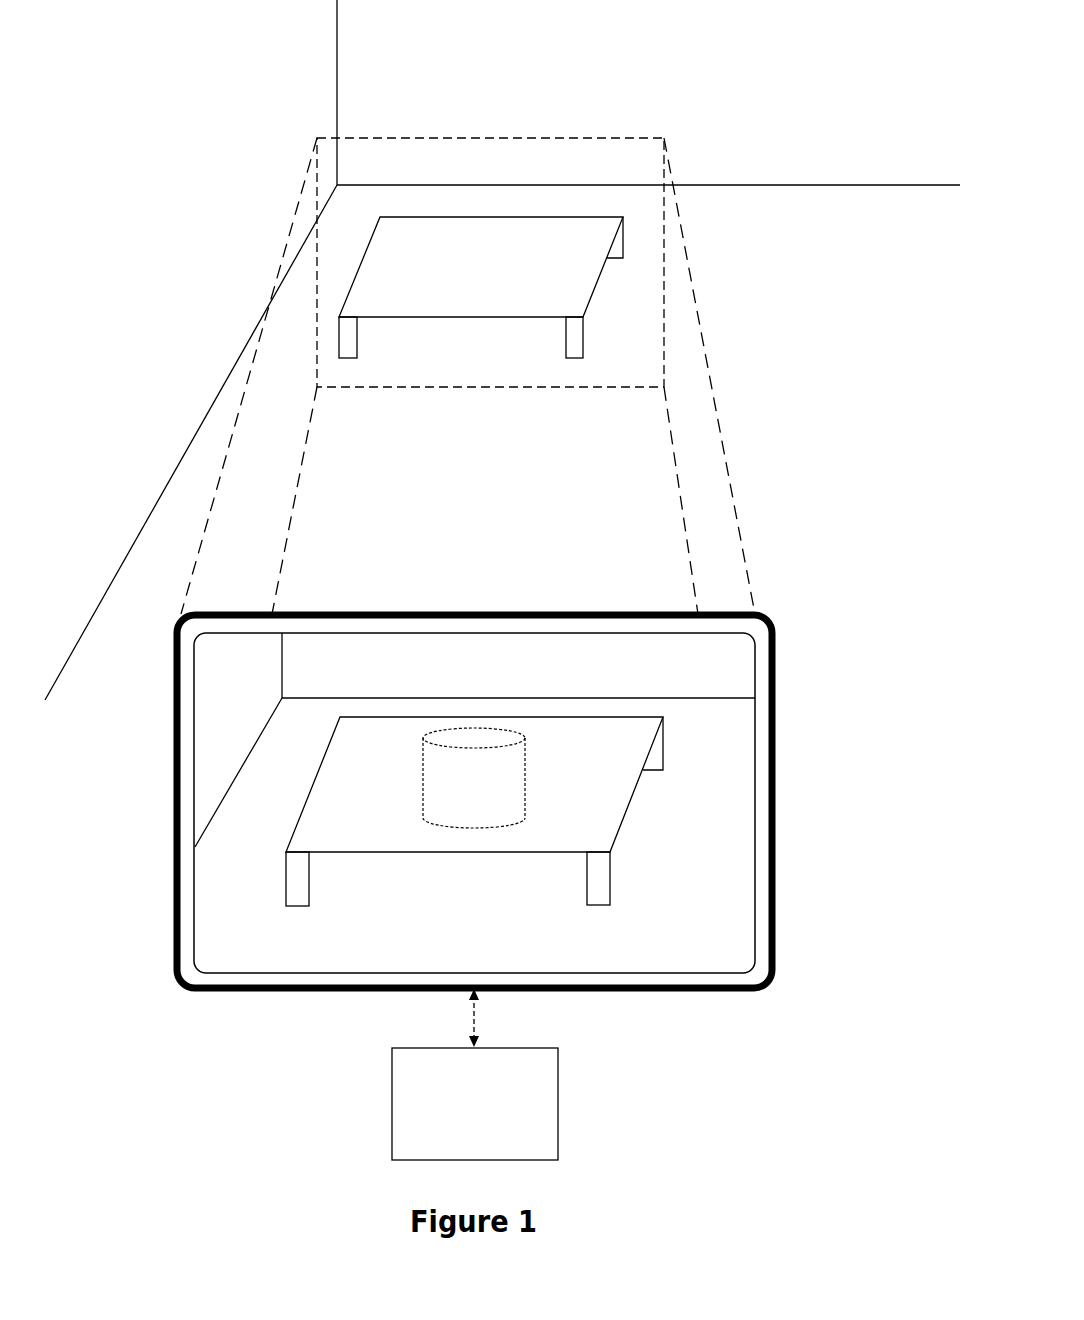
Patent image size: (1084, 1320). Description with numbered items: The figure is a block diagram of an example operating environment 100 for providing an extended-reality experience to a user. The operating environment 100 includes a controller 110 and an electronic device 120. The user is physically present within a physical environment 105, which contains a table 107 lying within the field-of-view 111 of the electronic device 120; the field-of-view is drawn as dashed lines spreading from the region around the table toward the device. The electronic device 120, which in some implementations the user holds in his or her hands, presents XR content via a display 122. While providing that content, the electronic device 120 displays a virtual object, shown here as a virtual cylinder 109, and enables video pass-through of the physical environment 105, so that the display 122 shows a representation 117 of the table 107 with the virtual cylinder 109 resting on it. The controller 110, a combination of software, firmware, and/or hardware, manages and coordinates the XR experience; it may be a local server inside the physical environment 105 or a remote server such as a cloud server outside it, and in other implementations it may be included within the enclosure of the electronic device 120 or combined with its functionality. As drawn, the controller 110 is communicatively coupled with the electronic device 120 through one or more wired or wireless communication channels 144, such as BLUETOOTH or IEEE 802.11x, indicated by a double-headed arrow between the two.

The operating environment 100 is at (257, 60).
The physical environment 105 is at (869, 43).
The table 107 is at (523, 213).
The virtual cylinder 109 is at (453, 738).
The controller 110 is at (547, 1116).
The field-of-view 111 is at (715, 402).
The representation of the table 117 is at (368, 716).
The electronic device 120 is at (172, 790).
The display 122 is at (210, 697).
The communication channels 144 is at (475, 1020).